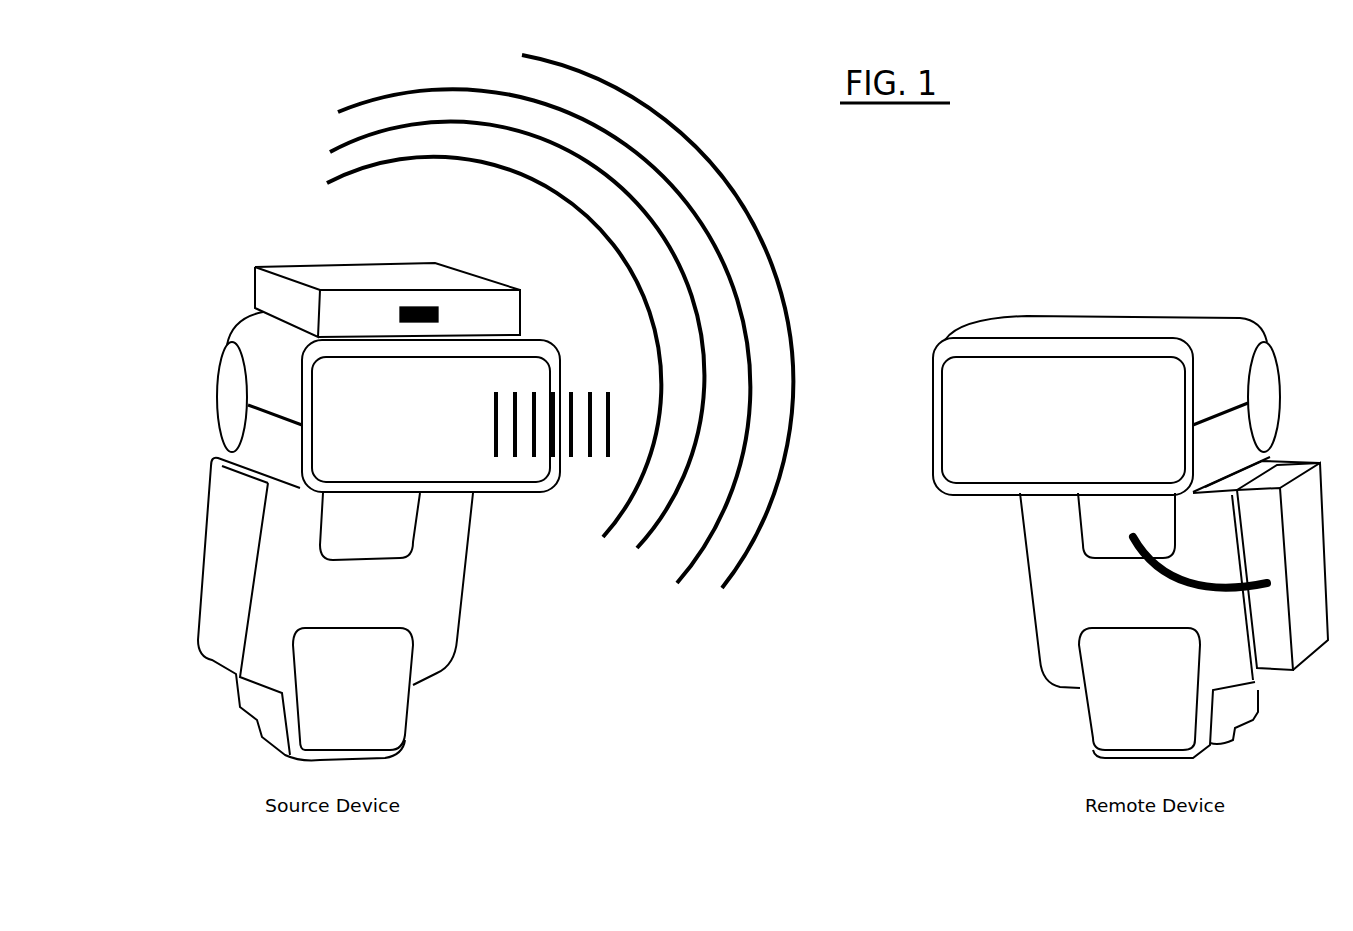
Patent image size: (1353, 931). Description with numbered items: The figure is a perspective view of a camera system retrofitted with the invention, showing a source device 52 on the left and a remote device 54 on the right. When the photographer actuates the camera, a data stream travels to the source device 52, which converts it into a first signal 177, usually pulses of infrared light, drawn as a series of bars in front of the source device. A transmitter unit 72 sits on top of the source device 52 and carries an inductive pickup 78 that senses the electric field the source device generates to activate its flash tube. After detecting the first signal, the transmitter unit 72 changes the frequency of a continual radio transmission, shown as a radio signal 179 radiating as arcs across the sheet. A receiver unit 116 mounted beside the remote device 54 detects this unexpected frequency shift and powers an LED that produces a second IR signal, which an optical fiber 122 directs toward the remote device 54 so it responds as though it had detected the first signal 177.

The source device 52 is at (287, 560).
The transmitter unit 72 is at (285, 298).
The inductive pickup 78 is at (388, 320).
The first signal 177 is at (606, 468).
The radio signal 179 is at (745, 467).
The remote device 54 is at (1220, 355).
The receiver unit 116 is at (1315, 456).
The optical fiber 122 is at (1153, 582).